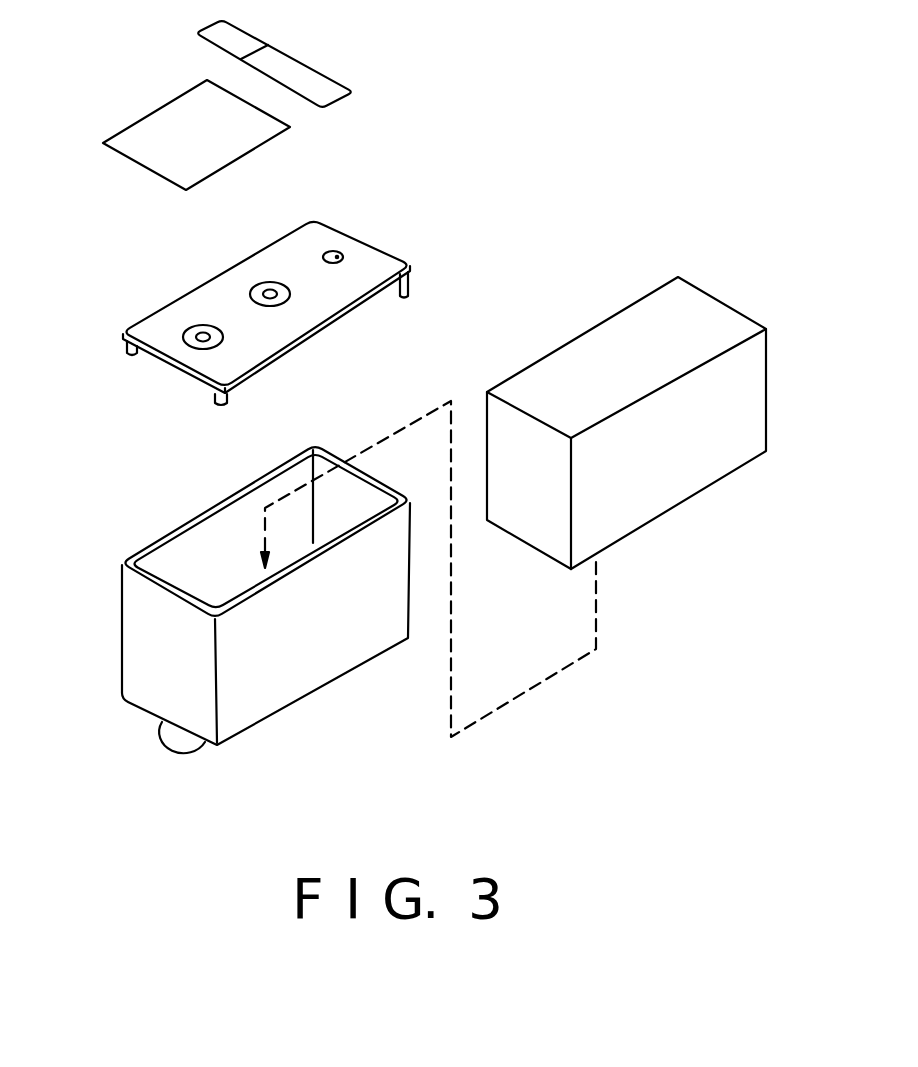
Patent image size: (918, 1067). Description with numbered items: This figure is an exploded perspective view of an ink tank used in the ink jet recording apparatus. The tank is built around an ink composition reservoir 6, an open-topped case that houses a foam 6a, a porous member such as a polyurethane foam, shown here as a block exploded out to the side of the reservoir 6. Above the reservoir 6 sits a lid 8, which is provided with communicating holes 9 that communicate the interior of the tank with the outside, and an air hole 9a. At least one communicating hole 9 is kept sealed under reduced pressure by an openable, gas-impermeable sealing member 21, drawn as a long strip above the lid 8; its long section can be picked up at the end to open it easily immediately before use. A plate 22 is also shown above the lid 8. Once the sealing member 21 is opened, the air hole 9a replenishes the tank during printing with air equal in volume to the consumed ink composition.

The gas-impermeable sealing member 21 is at (310, 85).
The insulating plate 22 is at (148, 135).
The lid 8 is at (383, 273).
The communicating hole 9 is at (271, 288).
The air hole 9a is at (340, 258).
The ink composition reservoir 6 is at (183, 558).
The foam 6a is at (583, 350).